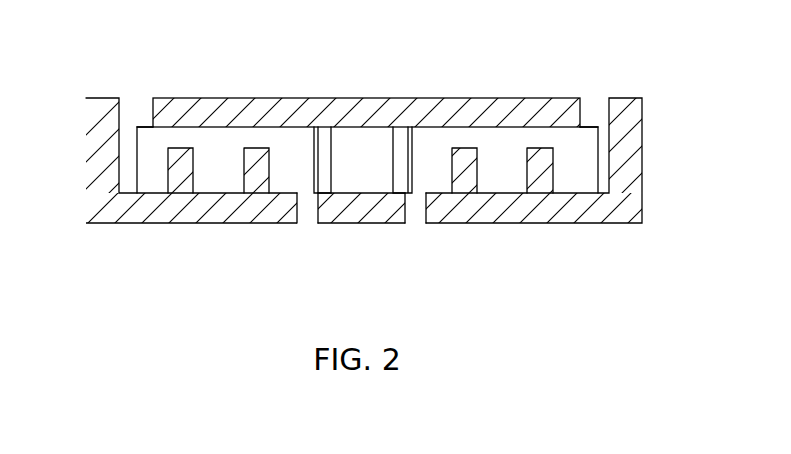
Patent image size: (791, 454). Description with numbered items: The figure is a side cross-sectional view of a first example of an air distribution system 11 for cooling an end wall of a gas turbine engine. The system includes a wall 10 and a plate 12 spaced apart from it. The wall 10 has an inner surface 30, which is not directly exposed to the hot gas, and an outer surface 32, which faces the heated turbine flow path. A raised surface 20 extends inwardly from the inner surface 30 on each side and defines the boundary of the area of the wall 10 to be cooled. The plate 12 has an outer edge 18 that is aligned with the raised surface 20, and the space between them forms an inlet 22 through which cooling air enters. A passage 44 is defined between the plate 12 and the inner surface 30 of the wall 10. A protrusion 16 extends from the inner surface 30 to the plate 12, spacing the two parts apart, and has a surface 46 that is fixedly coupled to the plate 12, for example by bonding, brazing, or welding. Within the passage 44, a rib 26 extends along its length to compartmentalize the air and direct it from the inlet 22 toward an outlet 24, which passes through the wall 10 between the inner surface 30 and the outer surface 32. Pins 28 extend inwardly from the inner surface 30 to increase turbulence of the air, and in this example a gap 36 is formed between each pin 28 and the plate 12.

The wall 10 is at (153, 212).
The air distribution system 11 is at (109, 257).
The plate 12 is at (274, 98).
The protrusion 16 is at (387, 182).
The outer edge 18 is at (153, 118).
The raised surface 20 is at (95, 98).
The inlet 22 is at (135, 88).
The outlet 24 is at (309, 220).
The rib 26 is at (213, 142).
The pin 28 is at (257, 173).
The inner surface 30 is at (582, 191).
The outer surface 32 is at (595, 223).
The gap 36 is at (271, 141).
The passage 44 is at (497, 128).
The surface 46 is at (373, 127).